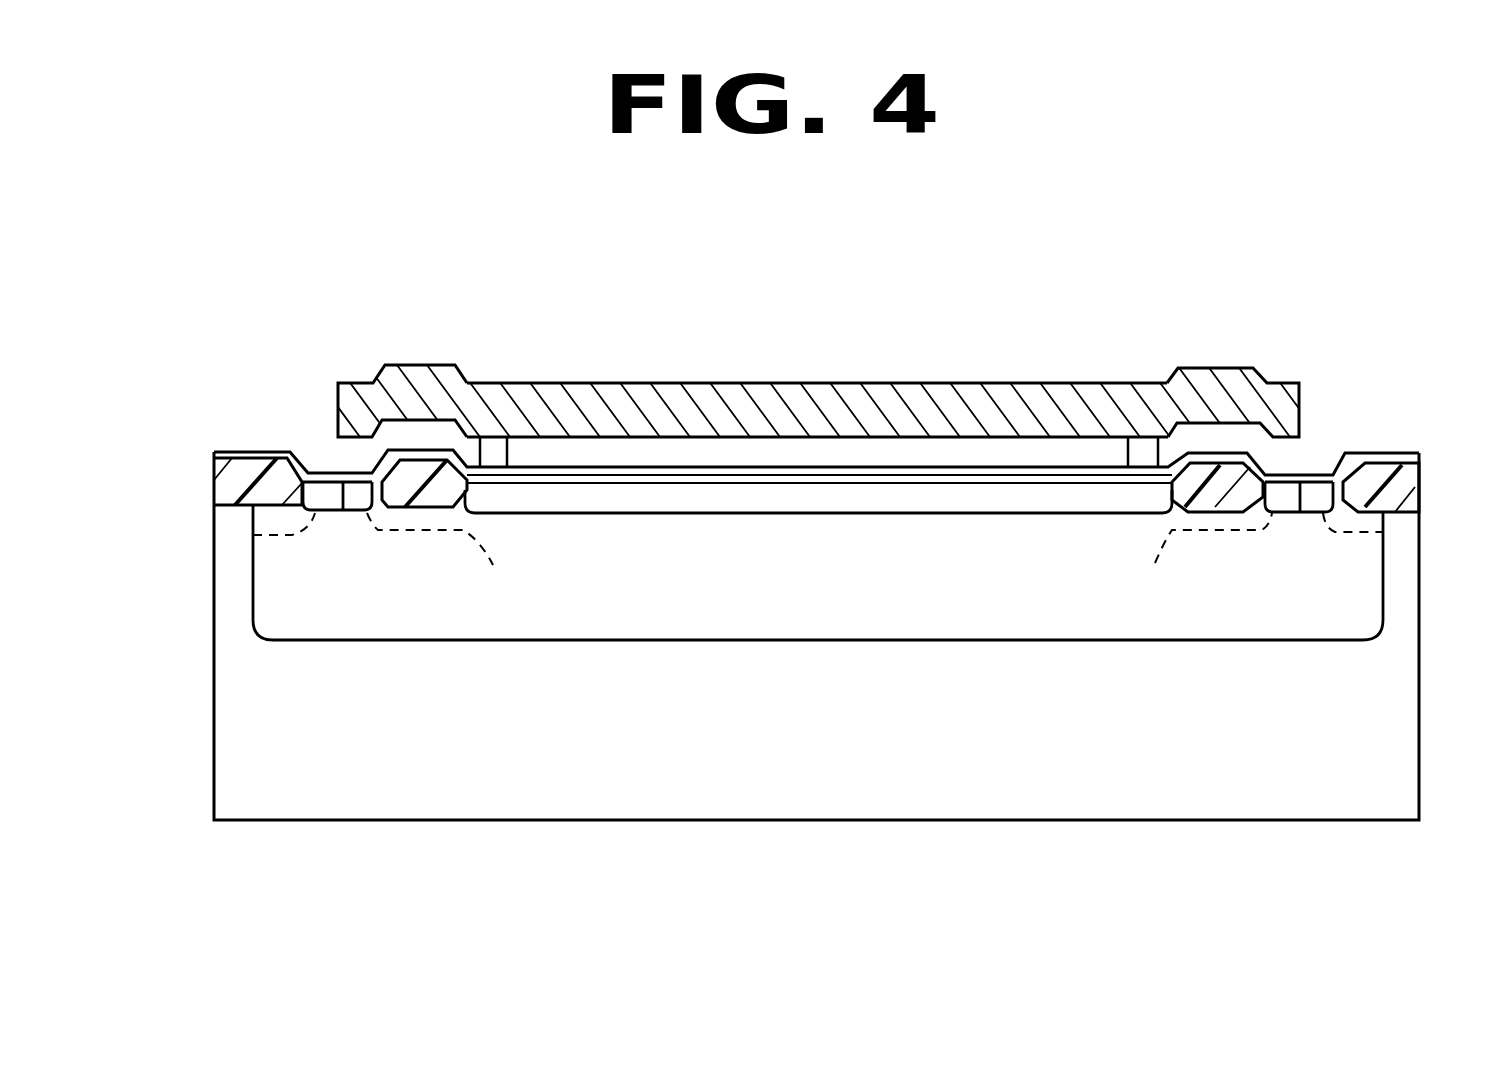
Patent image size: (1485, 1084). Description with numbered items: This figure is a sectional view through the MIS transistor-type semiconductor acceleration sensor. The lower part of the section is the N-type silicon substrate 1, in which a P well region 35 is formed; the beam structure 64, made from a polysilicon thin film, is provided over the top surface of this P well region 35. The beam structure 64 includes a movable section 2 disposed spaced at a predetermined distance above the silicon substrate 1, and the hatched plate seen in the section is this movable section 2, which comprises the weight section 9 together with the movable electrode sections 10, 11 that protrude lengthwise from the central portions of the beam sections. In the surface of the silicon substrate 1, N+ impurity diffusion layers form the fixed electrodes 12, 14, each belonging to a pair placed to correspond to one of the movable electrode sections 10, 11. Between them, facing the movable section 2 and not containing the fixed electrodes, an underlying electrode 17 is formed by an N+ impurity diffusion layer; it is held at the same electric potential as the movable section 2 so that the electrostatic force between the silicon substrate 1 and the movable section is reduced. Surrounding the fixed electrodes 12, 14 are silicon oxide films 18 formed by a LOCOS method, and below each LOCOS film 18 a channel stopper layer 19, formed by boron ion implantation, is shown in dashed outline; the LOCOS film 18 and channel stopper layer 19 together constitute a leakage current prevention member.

The silicon substrate 1 is at (1405, 732).
The movable section 2 is at (821, 364).
The weight section 9 is at (965, 392).
The movable electrode section 10 is at (360, 395).
The movable electrode section 11 is at (1282, 397).
The fixed electrode 12 is at (1297, 515).
The fixed electrode 14 is at (348, 513).
The underlying electrode 17 is at (928, 500).
The silicon oxide film 18 is at (237, 505).
The channel stopper layer 19 is at (818, 564).
The P well region 35 is at (922, 625).
The beam structure 64 is at (662, 381).